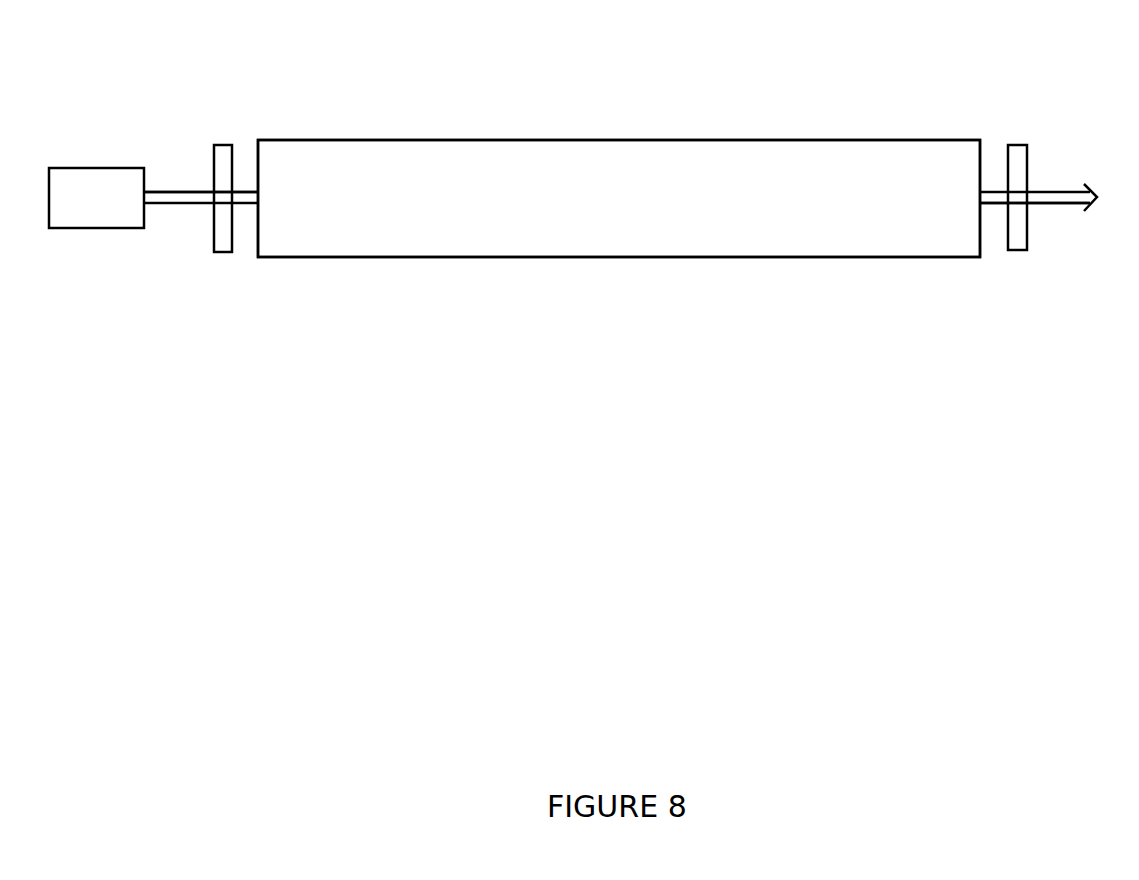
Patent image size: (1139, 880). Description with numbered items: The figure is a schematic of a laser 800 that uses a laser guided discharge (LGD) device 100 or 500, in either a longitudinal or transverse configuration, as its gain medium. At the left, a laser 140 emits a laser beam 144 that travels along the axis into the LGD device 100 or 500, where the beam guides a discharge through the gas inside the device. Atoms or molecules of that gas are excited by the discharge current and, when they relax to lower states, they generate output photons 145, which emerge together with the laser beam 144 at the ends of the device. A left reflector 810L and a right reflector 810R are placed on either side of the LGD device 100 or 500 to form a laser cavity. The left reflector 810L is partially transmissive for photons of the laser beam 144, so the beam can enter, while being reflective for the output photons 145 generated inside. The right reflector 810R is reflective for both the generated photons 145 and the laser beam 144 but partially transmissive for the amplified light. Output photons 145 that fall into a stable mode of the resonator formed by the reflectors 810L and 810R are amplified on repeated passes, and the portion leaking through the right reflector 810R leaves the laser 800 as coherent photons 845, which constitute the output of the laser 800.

The laser 800 is at (830, 80).
The laser 140 is at (110, 168).
The laser beam 144 is at (178, 203).
The output photons 145 is at (620, 206).
The left reflector 810L is at (225, 145).
The right reflector 810R is at (1017, 252).
The laser guided discharge (LGD) device 100 is at (619, 198).
The LGD device 500 is at (619, 198).
The coherent photons 845 is at (1067, 190).